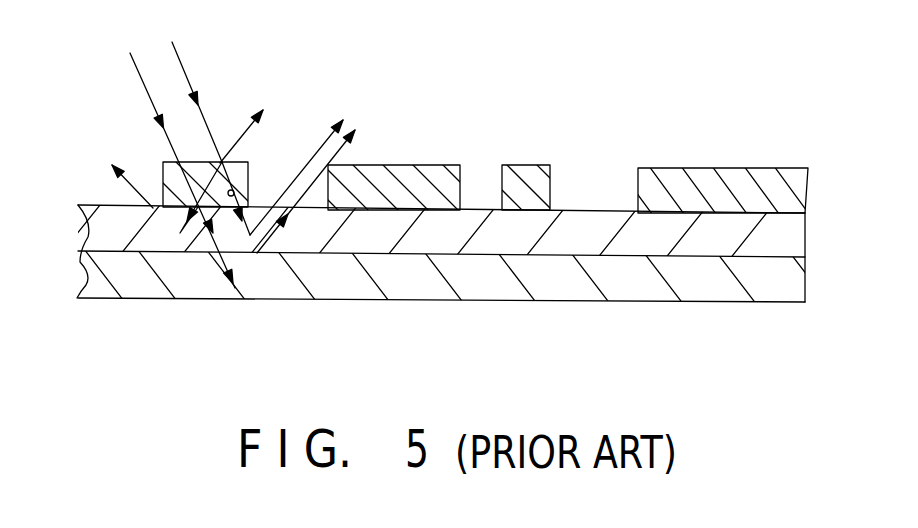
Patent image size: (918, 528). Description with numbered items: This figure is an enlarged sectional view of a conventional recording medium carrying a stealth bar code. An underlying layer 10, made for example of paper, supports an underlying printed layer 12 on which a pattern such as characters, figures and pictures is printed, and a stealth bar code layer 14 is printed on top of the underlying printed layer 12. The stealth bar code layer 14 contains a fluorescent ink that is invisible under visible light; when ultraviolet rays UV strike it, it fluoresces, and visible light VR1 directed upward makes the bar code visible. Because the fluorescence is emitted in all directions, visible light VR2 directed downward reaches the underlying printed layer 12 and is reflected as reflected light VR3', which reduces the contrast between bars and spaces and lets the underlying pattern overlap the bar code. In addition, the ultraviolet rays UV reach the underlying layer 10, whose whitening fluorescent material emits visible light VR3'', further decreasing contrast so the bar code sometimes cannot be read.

The underlying layer 10 is at (795, 290).
The underlying printed layer 12 is at (795, 237).
The stealth bar code layer 14 is at (690, 182).
The ultraviolet rays UV is at (178, 63).
The visible light directed upward VR1 is at (250, 134).
The visible light directed downward VR2 is at (249, 163).
The reflected light VR3' is at (331, 162).
The visible light generated by fluorescence of the underlying layer VR3'' is at (322, 239).